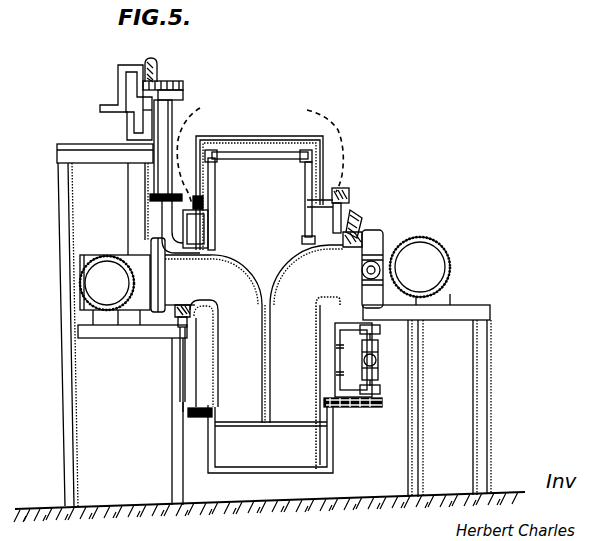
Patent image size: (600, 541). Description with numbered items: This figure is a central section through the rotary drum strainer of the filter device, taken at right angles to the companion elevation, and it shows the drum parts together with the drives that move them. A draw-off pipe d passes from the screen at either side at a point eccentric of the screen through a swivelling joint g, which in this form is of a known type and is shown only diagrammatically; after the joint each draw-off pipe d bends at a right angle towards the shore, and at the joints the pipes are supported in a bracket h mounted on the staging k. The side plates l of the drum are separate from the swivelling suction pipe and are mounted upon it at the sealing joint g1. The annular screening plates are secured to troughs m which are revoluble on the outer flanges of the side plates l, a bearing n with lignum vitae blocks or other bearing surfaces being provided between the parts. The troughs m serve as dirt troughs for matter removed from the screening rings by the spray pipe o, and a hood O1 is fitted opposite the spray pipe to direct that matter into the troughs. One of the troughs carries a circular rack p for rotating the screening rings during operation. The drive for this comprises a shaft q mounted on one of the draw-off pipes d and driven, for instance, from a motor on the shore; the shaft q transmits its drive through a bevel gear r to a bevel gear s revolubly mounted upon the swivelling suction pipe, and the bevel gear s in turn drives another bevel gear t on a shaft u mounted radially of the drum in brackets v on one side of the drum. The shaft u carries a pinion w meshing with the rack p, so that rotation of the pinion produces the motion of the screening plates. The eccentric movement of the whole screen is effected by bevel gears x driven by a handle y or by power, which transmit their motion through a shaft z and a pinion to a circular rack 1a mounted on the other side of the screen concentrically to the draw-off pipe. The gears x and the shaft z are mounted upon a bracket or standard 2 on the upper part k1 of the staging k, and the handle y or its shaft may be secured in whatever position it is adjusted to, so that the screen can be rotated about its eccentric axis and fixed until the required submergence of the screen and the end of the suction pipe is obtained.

The upper part of the staging k1 is at (83, 144).
The staging k is at (72, 373).
The draw-off pipe d is at (466, 246).
The handle y is at (118, 85).
The bracket or standard 2 is at (144, 118).
The bevel gears x is at (158, 64).
The shaft z is at (168, 108).
The hood O1 is at (260, 150).
The spray pipe o is at (304, 170).
The trough m is at (204, 198).
The side plate l is at (191, 228).
The circular rack p is at (348, 193).
The bevel gear s is at (352, 220).
The bevel gear r is at (383, 246).
The shaft q is at (380, 270).
The swivelling joint g is at (160, 314).
The sealing joint g1 is at (183, 305).
The bracket h is at (180, 330).
The circular rack 1a is at (183, 386).
The bearing n is at (175, 449).
The bevel gear t is at (376, 335).
The bracket v is at (369, 370).
The shaft u is at (376, 380).
The pinion w is at (378, 405).